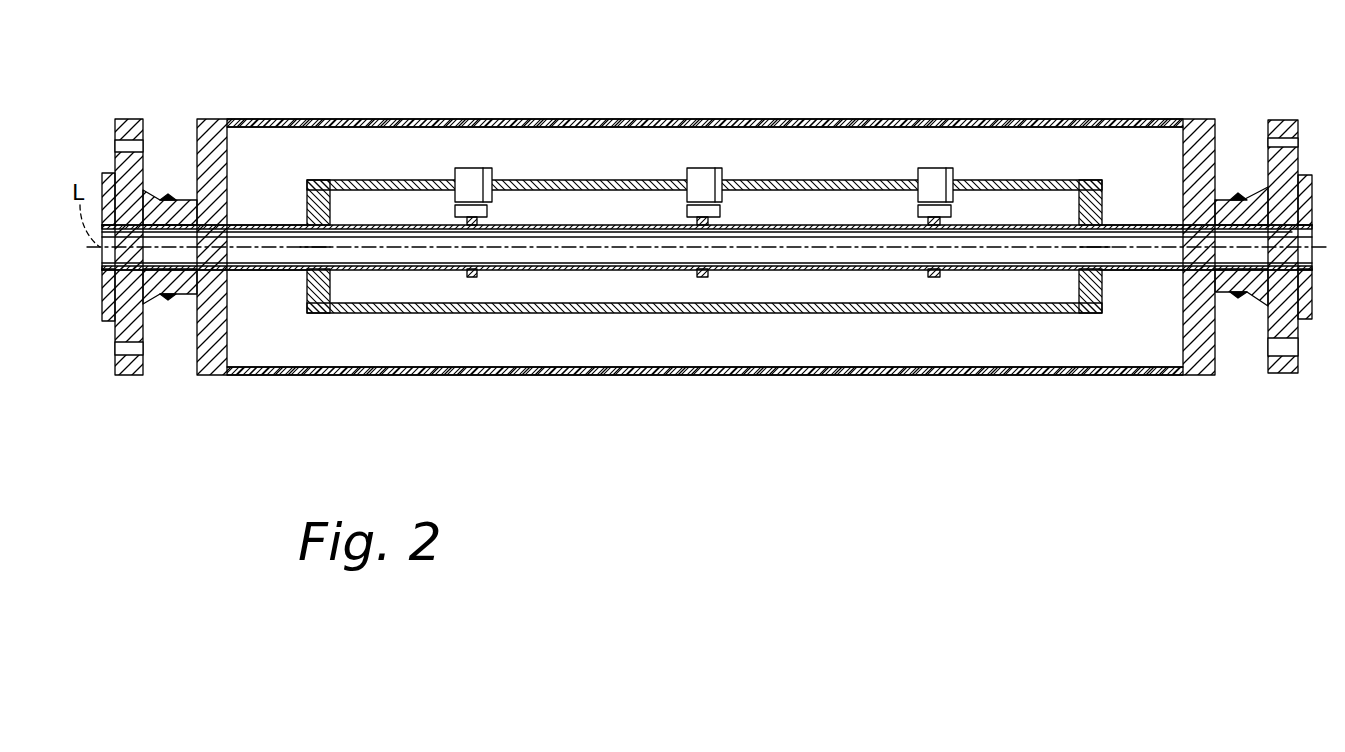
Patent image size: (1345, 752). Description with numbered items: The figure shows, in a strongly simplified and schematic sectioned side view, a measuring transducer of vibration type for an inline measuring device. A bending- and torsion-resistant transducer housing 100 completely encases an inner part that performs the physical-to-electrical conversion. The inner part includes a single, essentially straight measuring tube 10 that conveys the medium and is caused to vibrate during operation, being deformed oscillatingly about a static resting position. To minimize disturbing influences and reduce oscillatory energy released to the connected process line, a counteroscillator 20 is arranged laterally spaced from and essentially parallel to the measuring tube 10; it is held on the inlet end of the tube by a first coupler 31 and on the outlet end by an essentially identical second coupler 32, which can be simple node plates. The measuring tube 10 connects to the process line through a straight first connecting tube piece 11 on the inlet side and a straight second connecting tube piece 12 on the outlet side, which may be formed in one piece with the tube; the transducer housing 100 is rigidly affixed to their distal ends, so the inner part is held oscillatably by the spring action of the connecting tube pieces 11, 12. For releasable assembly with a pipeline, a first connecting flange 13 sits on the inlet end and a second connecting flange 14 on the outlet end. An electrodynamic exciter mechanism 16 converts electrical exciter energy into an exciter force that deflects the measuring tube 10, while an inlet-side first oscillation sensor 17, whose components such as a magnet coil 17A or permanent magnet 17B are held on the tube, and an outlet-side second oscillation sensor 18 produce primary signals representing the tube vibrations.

The transducer housing 100 is at (727, 370).
The measuring tube 10 is at (838, 255).
The first connecting tube piece 11 is at (277, 262).
The second connecting tube piece 12 is at (1143, 262).
The first connecting flange 13 is at (125, 127).
The second connecting flange 14 is at (1285, 125).
The exciter mechanism 16 is at (731, 173).
The first oscillation sensor 17 is at (502, 207).
The magnet coil 17A is at (466, 176).
The permanent magnet 17B is at (492, 210).
The second oscillation sensor 18 is at (961, 174).
The counteroscillator 20 is at (528, 306).
The first coupler 31 is at (330, 205).
The second coupler 32 is at (1080, 205).